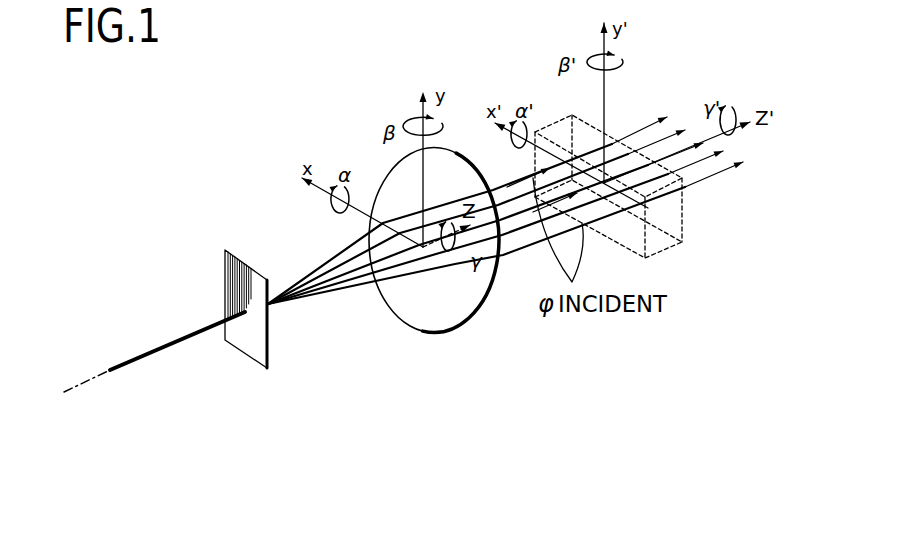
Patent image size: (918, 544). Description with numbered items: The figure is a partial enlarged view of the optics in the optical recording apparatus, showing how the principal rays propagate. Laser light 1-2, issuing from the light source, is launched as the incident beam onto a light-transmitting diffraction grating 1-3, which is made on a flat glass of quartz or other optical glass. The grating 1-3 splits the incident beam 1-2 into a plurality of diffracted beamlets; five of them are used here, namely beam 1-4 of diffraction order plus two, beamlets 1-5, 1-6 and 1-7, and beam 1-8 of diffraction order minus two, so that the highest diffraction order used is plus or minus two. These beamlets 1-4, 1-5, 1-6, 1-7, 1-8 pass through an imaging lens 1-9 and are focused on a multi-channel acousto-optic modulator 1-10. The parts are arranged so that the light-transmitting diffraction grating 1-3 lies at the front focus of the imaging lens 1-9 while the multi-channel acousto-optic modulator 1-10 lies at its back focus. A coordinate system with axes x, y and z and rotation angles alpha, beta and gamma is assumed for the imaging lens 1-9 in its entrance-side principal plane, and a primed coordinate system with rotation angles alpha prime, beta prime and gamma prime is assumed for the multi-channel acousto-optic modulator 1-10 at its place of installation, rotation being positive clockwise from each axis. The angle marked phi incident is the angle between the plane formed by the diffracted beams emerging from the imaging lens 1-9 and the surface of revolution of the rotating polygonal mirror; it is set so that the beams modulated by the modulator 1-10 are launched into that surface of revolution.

The laser light 1-2 is at (152, 349).
The light-transmitting diffraction grating 1-3 is at (245, 345).
The diffracted beam of diffraction order +2 1-4 is at (295, 278).
The diffracted beamlet 1-5 is at (312, 265).
The diffracted beamlet 1-6 is at (335, 270).
The diffracted beamlet 1-7 is at (340, 295).
The diffracted beam of diffraction order -2 1-8 is at (308, 308).
The imaging lens 1-9 is at (467, 322).
The multi-channel acousto-optic modulator 1-10 is at (682, 243).